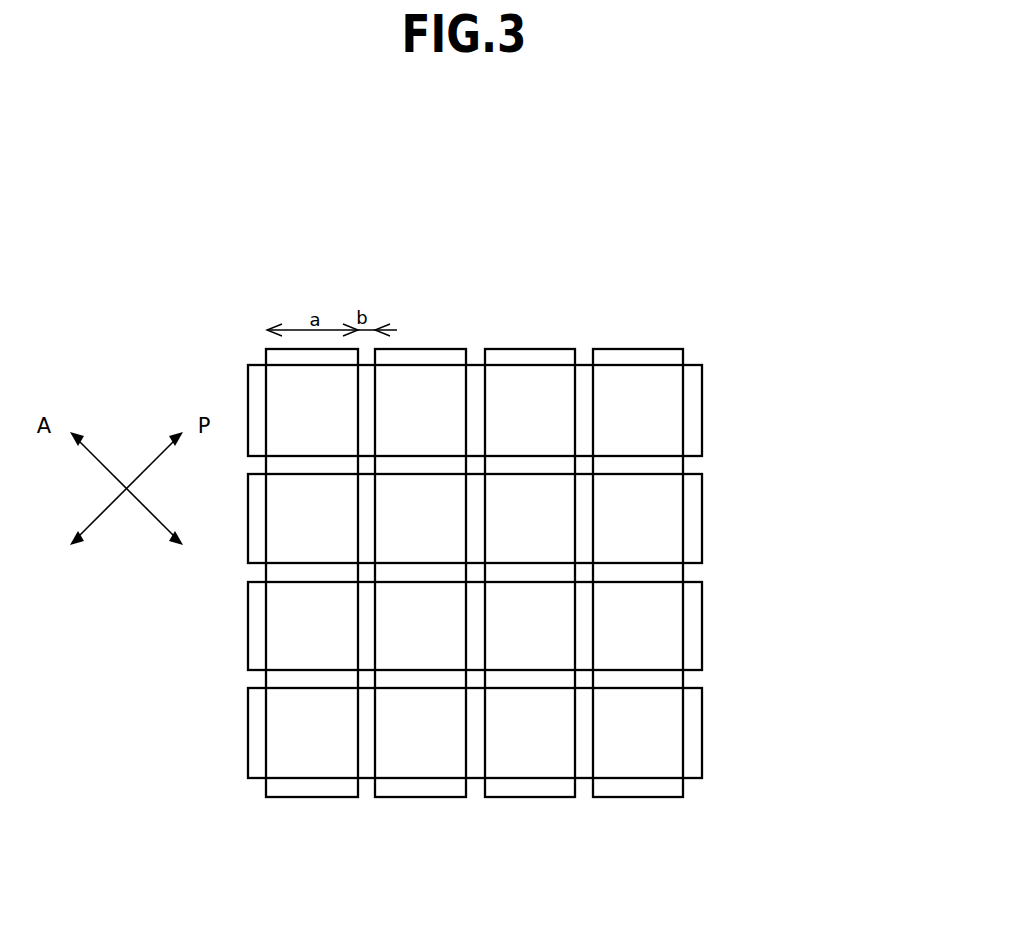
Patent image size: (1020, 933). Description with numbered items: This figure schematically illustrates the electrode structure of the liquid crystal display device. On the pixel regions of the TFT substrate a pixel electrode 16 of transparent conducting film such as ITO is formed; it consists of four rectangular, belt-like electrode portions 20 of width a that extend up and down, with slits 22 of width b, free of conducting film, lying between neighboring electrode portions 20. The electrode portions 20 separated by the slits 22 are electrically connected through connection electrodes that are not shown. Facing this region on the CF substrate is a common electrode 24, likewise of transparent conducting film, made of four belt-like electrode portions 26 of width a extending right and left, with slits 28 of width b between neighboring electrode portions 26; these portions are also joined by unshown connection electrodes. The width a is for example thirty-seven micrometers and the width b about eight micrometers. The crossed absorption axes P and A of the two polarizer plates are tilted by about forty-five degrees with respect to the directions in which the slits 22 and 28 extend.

The pixel electrode 16 is at (643, 250).
The electrode portion 20 is at (296, 354).
The slit 22 is at (366, 354).
The common electrode 24 is at (822, 390).
The electrode portion 26 is at (698, 403).
The slit 28 is at (698, 467).